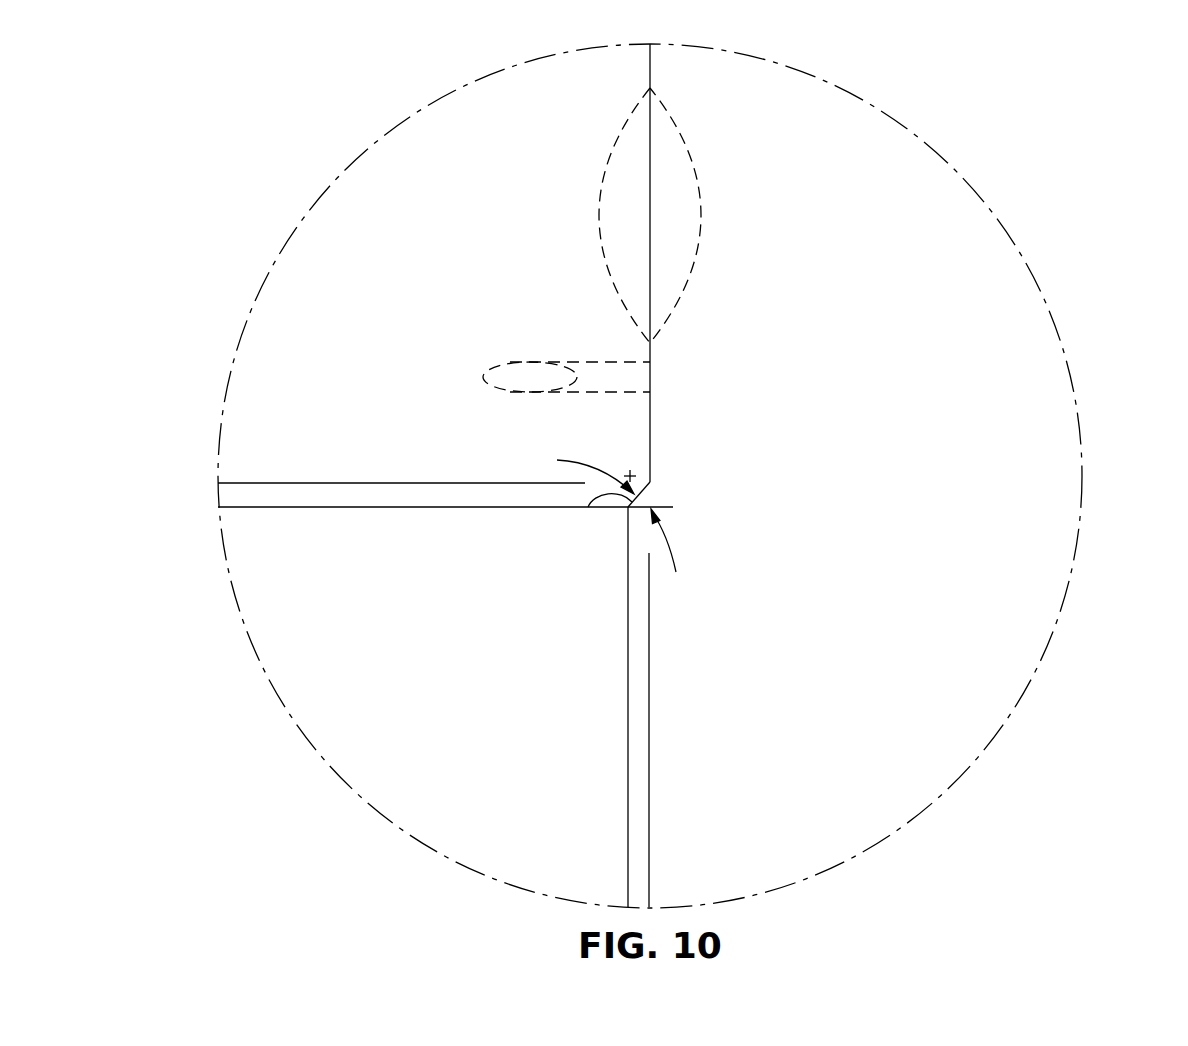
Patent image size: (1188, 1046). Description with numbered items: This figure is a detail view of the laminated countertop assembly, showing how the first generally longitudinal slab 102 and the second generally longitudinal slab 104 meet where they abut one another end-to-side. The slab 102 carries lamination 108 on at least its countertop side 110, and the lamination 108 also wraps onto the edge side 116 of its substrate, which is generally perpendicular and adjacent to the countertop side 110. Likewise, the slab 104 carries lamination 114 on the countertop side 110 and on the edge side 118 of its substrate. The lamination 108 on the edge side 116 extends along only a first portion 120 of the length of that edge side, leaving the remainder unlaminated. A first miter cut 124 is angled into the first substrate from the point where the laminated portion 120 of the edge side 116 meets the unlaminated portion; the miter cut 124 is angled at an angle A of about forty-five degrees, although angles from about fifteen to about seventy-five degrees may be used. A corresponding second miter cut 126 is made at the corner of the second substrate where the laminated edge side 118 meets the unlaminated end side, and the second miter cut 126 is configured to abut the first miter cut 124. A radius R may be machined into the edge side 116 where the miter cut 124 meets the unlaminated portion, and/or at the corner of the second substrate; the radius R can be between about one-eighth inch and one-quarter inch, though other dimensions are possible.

The first generally longitudinal slab 102 is at (895, 175).
The second generally longitudinal slab 104 is at (368, 210).
The lamination 108 is at (1045, 343).
The countertop side 110 is at (403, 143).
The lamination 114 is at (250, 383).
The edge side 116 is at (638, 796).
The edge side 118 is at (315, 497).
The first portion 120 is at (638, 725).
The first miter cut 124 is at (588, 508).
The second miter cut 126 is at (631, 508).
The angle A is at (650, 521).
The radius R is at (656, 483).